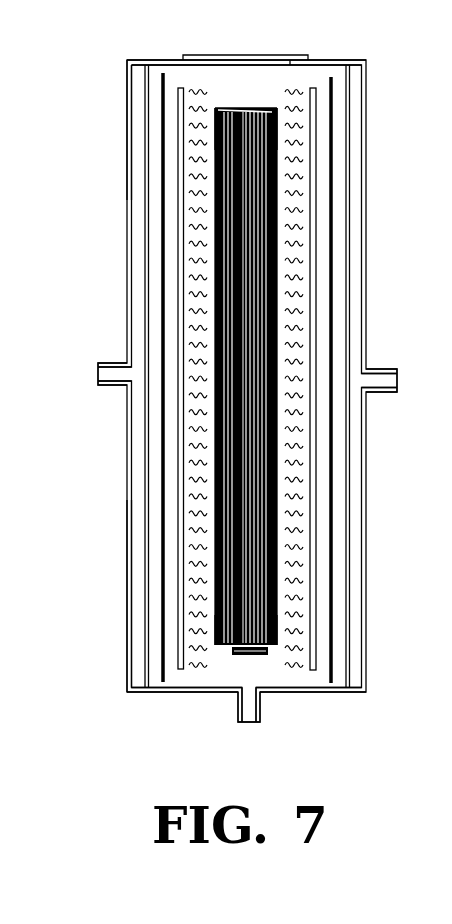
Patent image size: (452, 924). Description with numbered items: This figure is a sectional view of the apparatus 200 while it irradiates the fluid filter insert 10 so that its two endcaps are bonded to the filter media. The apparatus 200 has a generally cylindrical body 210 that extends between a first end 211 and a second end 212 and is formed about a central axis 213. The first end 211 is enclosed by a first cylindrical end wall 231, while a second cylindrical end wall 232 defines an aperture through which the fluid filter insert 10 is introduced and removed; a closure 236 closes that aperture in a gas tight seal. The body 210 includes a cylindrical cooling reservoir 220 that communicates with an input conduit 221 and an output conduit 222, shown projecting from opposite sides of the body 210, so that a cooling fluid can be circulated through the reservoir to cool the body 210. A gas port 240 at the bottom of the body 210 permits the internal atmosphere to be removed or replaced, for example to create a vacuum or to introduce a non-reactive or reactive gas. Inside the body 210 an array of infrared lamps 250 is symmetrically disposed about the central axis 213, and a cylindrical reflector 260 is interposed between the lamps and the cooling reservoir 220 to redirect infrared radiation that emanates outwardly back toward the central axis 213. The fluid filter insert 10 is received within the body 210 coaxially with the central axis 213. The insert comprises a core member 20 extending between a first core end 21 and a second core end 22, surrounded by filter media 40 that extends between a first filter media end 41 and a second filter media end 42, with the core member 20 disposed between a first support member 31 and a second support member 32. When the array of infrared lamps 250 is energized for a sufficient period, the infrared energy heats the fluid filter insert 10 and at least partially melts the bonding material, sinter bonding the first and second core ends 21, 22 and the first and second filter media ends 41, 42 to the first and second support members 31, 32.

The apparatus 200 is at (310, 43).
The body 210 is at (128, 453).
The first end 211 is at (128, 647).
The second end 212 is at (127, 97).
The central axis 213 is at (243, 548).
The cooling reservoir 220 is at (143, 225).
The input conduit 221 is at (113, 375).
The output conduit 222 is at (377, 379).
The first cylindrical end wall 231 is at (182, 690).
The second cylindrical end wall 232 is at (158, 62).
The closure 236 is at (265, 55).
The gas port 240 is at (253, 713).
The array of infrared lamps 250 is at (178, 170).
The cylindrical reflector 260 is at (163, 308).
The fluid filter insert 10 is at (232, 388).
The core member 20 is at (277, 273).
The first core end 21 is at (277, 632).
The second core end 22 is at (277, 132).
The first support member 31 is at (283, 648).
The second support member 32 is at (277, 108).
The filter media 40 is at (277, 318).
The first filter media end 41 is at (277, 622).
The second filter media end 42 is at (277, 148).